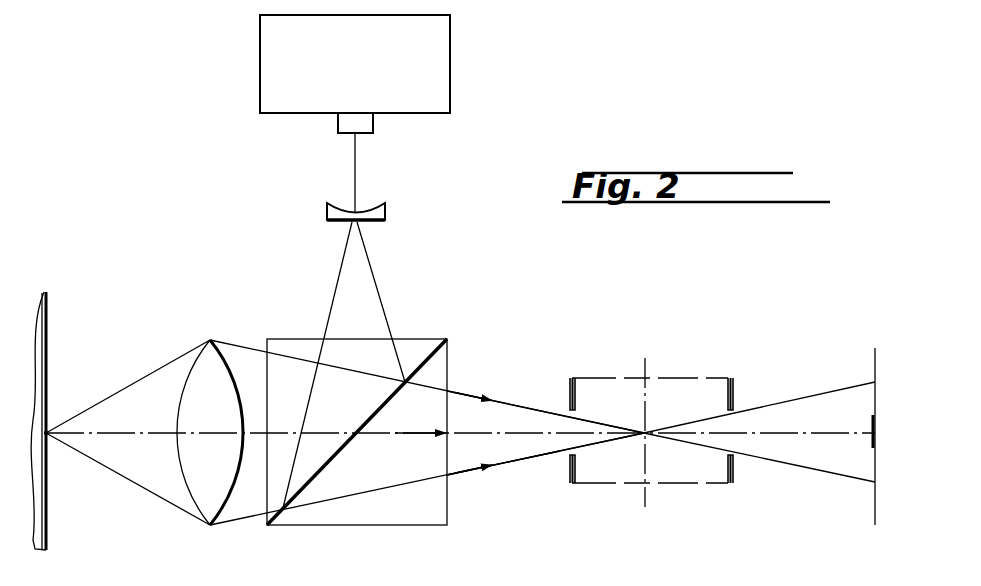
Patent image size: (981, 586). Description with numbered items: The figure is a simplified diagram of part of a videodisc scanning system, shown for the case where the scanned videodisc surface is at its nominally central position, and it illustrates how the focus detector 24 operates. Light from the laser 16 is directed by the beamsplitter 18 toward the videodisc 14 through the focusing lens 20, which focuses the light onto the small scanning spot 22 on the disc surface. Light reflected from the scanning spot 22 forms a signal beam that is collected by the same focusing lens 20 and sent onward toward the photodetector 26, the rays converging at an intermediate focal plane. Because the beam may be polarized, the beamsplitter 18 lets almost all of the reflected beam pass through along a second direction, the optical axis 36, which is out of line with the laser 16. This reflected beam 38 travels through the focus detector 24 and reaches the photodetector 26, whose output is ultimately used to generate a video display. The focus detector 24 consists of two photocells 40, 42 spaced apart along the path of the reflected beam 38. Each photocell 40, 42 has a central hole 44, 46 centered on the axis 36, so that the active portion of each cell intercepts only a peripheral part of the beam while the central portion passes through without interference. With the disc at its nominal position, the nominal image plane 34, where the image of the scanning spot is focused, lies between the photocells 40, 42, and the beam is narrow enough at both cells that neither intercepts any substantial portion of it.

The videodisc 14 is at (50, 322).
The laser 16 is at (450, 65).
The beamsplitter 18 is at (425, 338).
The focusing lens 20 is at (205, 355).
The scanning spot 22 is at (49, 438).
The focus detector 24 is at (728, 337).
The photodetector 26 is at (875, 362).
The nominal image plane 34 is at (648, 495).
The optical axis 36 is at (518, 437).
The reflected beam 38 is at (473, 462).
The photocell 40 is at (577, 478).
The photocell 42 is at (735, 480).
The central hole 44 is at (568, 410).
The central hole 46 is at (735, 410).